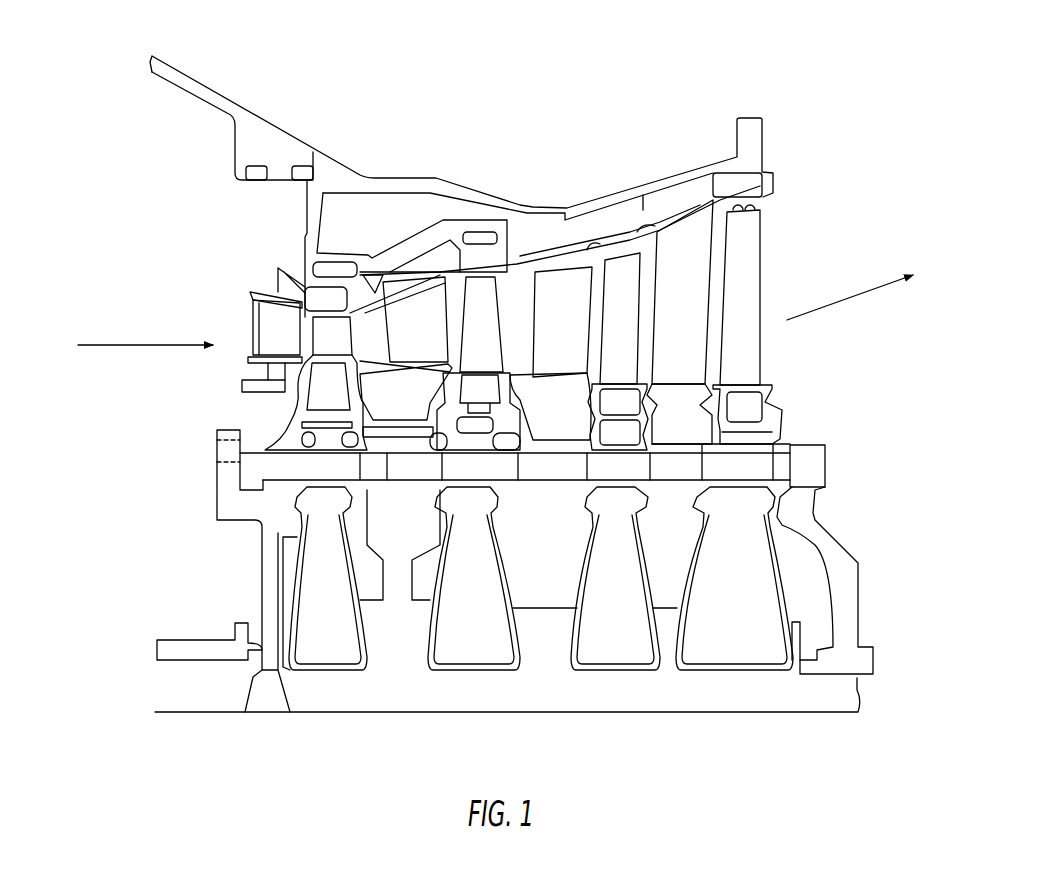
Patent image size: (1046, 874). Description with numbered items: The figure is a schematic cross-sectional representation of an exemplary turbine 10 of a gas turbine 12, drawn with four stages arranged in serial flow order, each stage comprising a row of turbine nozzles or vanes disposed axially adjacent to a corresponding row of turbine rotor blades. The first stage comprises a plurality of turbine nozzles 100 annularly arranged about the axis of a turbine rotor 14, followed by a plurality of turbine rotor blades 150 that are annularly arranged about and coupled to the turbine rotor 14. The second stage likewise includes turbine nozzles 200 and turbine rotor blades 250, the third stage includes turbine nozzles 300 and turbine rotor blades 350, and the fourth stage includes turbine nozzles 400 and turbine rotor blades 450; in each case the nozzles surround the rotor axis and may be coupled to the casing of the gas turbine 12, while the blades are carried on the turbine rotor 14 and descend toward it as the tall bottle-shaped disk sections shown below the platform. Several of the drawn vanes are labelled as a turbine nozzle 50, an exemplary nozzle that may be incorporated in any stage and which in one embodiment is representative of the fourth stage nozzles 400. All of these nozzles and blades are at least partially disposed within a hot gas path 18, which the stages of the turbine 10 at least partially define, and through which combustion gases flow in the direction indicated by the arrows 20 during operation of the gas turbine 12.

The turbine 10 is at (490, 186).
The gas turbine 12 is at (352, 88).
The turbine rotor 14 is at (385, 688).
The hot gas path 18 is at (372, 335).
The arrows 20 is at (110, 345).
The turbine nozzle 50 is at (290, 341).
The turbine nozzles 100 is at (260, 347).
The turbine rotor blades 150 is at (348, 346).
The turbine nozzles 200 is at (408, 302).
The turbine rotor blades 250 is at (495, 343).
The turbine nozzles 300 is at (549, 280).
The turbine rotor blades 350 is at (620, 278).
The turbine nozzles 400 is at (692, 241).
The turbine rotor blades 450 is at (744, 270).